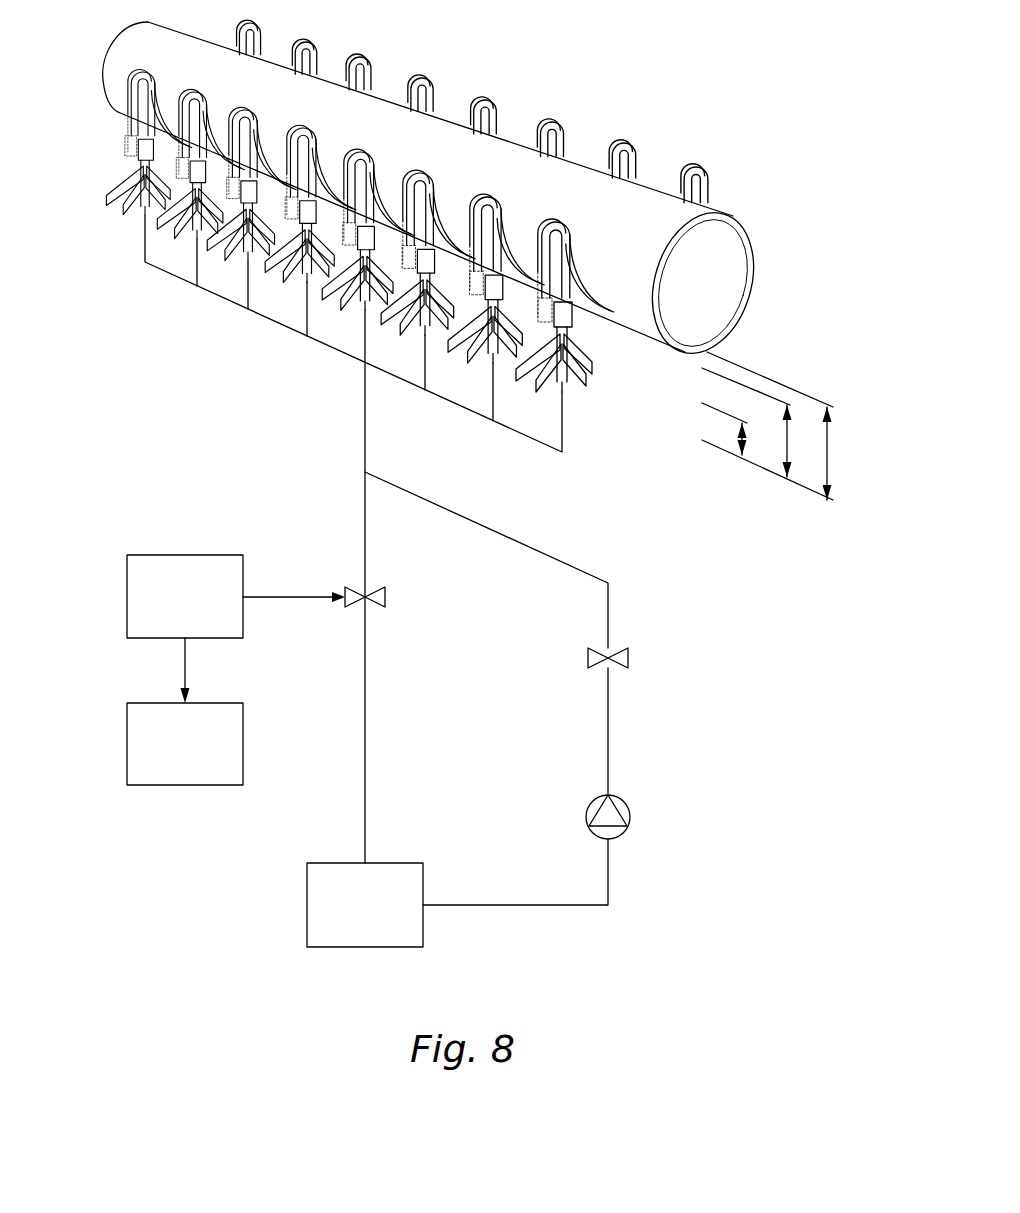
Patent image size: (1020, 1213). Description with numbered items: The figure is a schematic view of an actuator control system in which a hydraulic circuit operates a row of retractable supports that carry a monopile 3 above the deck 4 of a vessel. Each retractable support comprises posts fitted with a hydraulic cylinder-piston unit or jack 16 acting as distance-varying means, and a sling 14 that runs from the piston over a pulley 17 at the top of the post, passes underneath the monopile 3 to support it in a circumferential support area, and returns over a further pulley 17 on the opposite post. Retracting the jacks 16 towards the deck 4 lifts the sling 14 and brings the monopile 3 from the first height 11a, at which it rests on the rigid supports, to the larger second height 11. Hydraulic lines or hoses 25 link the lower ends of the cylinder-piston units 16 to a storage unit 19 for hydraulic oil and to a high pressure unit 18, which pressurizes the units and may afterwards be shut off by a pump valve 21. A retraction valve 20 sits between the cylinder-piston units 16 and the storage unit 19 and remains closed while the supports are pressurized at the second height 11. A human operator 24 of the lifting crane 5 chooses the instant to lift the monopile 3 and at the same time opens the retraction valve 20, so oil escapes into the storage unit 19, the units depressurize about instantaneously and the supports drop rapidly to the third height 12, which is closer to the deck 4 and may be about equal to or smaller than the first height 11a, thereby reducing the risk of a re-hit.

The monopile 3 is at (630, 245).
The deck 4 is at (124, 323).
The lifting crane 5 is at (194, 756).
The second height 11 is at (828, 451).
The first height 11a is at (785, 442).
The third height 12 is at (737, 442).
The sling 14 is at (446, 214).
The cylinder-piston unit 16 is at (128, 142).
The pulley 17 is at (302, 136).
The high pressure unit 18 is at (649, 819).
The storage unit 19 is at (380, 919).
The retraction valve 20 is at (405, 602).
The pump valve 21 is at (649, 664).
The human operator 24 is at (200, 611).
The hydraulic lines 25 is at (230, 301).